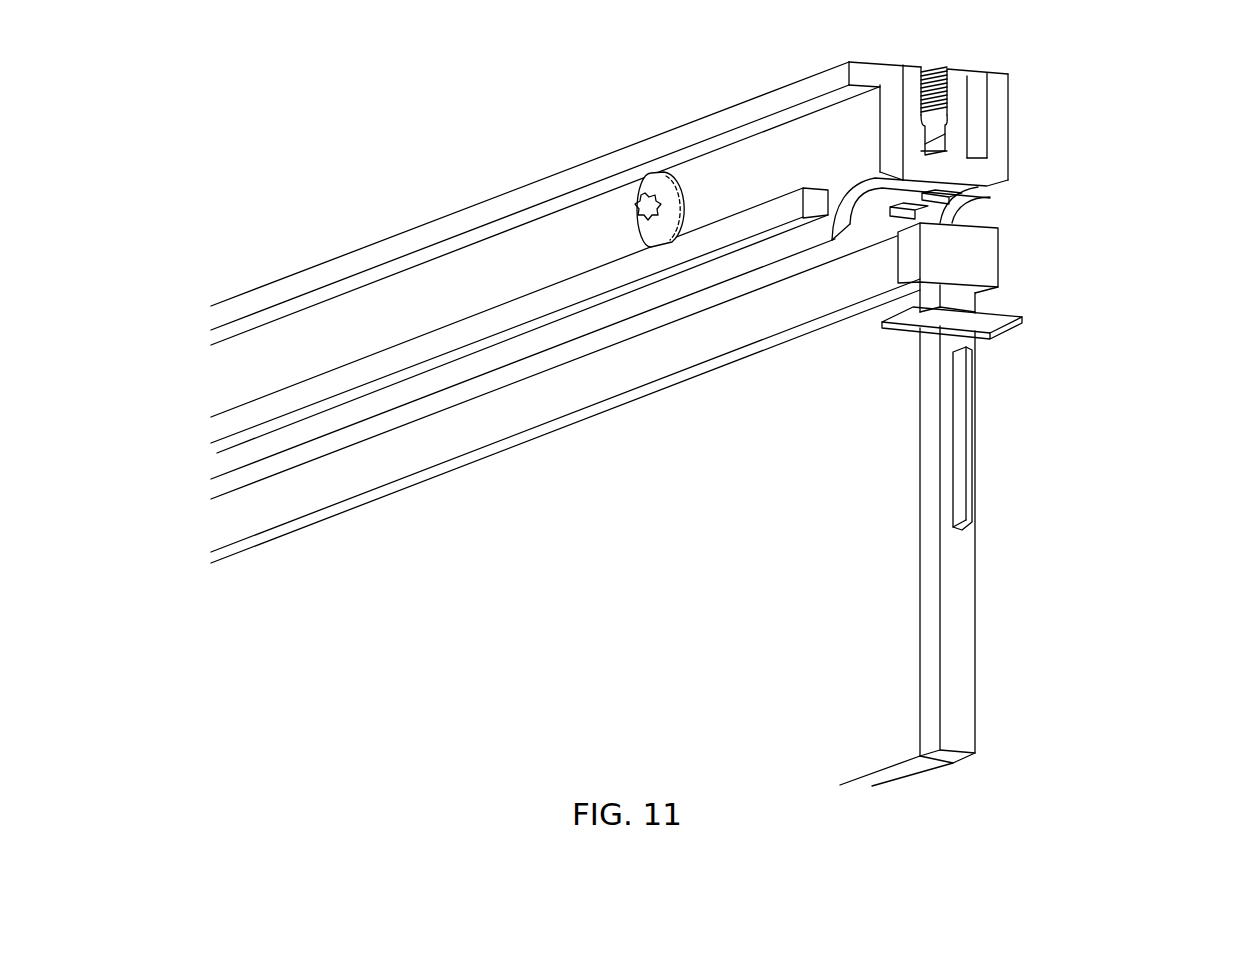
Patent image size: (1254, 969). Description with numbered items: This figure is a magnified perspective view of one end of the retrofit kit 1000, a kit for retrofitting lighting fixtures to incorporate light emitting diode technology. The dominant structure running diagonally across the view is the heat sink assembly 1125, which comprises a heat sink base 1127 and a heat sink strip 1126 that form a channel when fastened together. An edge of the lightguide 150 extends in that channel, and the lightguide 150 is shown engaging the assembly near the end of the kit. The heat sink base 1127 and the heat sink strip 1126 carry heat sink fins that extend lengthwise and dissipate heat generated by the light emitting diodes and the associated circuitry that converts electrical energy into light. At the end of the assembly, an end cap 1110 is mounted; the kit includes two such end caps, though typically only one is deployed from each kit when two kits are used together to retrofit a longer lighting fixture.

The heat sink assembly 1125 is at (452, 125).
The heat sink strip 1126 is at (410, 228).
The heat sink base 1127 is at (997, 118).
The lightguide 150 is at (973, 197).
The end cap 1110 is at (967, 572).
The retrofit kit 1000 is at (1057, 790).